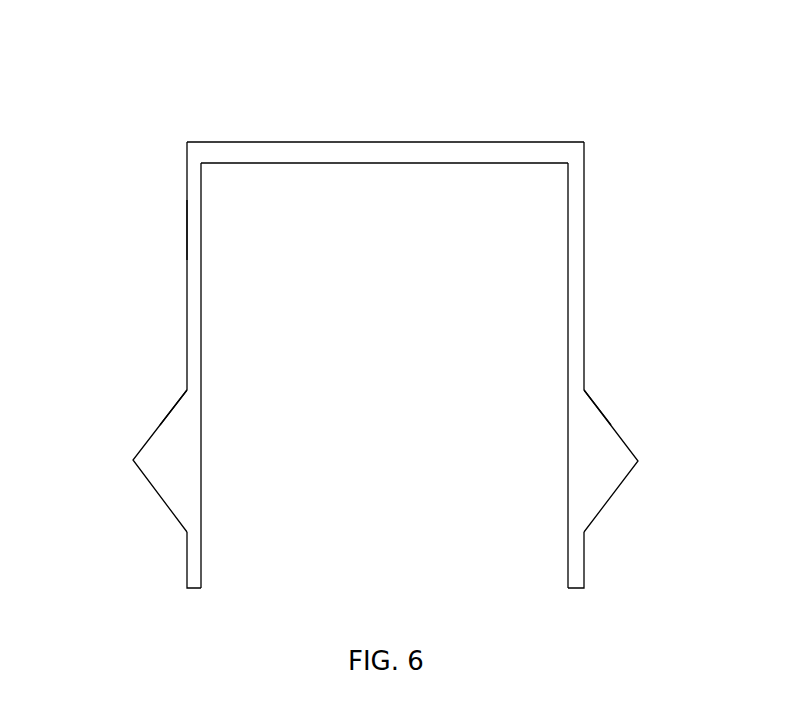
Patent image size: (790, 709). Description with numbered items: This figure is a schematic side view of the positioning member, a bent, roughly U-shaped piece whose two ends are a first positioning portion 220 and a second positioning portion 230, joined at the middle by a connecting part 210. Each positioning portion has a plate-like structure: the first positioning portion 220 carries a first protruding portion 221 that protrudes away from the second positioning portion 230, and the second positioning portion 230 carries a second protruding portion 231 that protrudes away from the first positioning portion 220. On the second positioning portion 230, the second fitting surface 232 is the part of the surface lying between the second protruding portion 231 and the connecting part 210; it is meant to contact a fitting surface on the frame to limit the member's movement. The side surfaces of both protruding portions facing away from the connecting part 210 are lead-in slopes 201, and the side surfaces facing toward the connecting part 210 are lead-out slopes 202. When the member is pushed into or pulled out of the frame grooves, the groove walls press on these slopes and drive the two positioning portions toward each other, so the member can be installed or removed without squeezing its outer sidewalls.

The connecting part 210 is at (321, 149).
The first positioning portion 220 is at (577, 297).
The second positioning portion 230 is at (194, 298).
The second fitting surface 232 is at (186, 230).
The second protruding portion 231 is at (177, 468).
The first protruding portion 221 is at (595, 452).
The lead-out slope 202 is at (160, 418).
The lead-in slope 201 is at (163, 503).